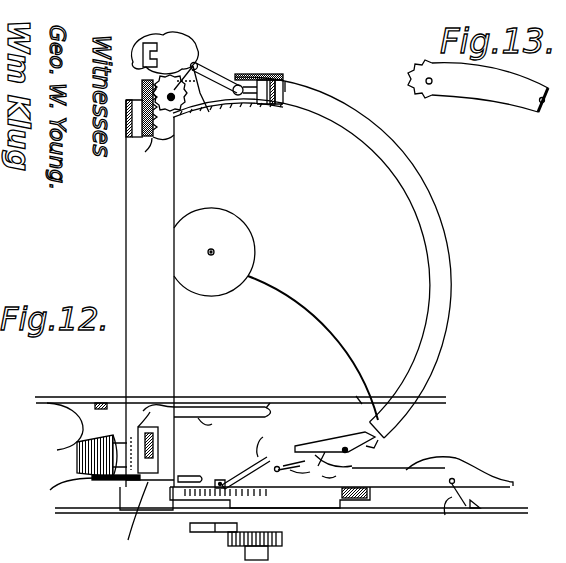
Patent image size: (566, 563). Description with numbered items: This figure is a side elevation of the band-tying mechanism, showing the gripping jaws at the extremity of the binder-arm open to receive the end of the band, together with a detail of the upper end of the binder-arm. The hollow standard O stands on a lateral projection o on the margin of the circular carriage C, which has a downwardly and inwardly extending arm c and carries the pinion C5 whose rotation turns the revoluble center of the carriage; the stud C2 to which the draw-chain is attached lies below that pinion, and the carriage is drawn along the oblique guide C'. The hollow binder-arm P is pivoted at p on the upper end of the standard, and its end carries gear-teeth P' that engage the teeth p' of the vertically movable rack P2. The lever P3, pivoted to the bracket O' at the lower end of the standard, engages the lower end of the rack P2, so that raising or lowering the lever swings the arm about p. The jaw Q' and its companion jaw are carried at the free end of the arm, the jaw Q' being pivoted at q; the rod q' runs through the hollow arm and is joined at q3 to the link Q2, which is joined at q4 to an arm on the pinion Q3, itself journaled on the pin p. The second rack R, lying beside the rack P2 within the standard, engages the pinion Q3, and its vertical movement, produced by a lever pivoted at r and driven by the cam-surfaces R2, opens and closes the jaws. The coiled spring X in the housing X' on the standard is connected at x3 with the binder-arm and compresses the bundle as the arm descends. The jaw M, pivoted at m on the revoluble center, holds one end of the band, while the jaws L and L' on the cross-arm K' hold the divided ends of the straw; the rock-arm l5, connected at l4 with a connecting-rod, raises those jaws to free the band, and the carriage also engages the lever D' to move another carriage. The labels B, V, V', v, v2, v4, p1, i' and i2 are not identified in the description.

In FIG. 12, the hollow standard O is at (150, 293).
In FIG. 12, the carriage C is at (175, 241).
In FIG. 12, the second rack R is at (141, 88).
In FIG. 12, the pinion Q3 is at (170, 87).
In FIG. 12, the rack-bar P2 is at (168, 53).
In FIG. 12, the pivot of binder-arm p is at (225, 87).
In FIG. 12, the teeth of rack-bar p' is at (145, 151).
In FIG. 12, the link Q2 is at (224, 74).
In FIG. 12, the link connection to pinion arm q4 is at (230, 72).
In FIG. 12, the link connection to rod q3 is at (250, 78).
In FIG. 12, the binder-arm P is at (343, 257).
In FIG. 13, the binder-arm P is at (490, 97).
In FIG. 12, the rod q' is at (323, 243).
In FIG. 12, the housing X' is at (214, 252).
In FIG. 12, the coiled spring X is at (313, 348).
In FIG. 12, the spring connection x3 is at (356, 396).
In FIG. 12, the bed B is at (258, 397).
In FIG. 12, the bracket O' is at (88, 446).
In FIG. 12, the cam-surfaces R2 is at (77, 458).
In FIG. 12, the lever P3 is at (160, 441).
In FIG. 12, the slide pin p1 is at (133, 453).
In FIG. 12, the bar V' is at (207, 396).
In FIG. 12, the bar end v4 is at (278, 404).
In FIG. 12, the hook v2 is at (212, 426).
In FIG. 12, the jaw M is at (254, 438).
In FIG. 12, the jaw L' is at (246, 469).
In FIG. 12, the jaw L is at (289, 455).
In FIG. 12, the pivot of jaw M m is at (218, 480).
In FIG. 12, the slide v is at (190, 468).
In FIG. 12, the jaw Q' is at (370, 443).
In FIG. 12, the pivot of jaw Q' q is at (382, 440).
In FIG. 12, the link i2 is at (296, 480).
In FIG. 12, the link i' is at (327, 483).
In FIG. 12, the cross-arm K' is at (459, 462).
In FIG. 12, the lever D' is at (370, 496).
In FIG. 12, the pivotal connection l4 is at (482, 500).
In FIG. 12, the rock-arm l5 is at (449, 518).
In FIG. 12, the arm c is at (165, 513).
In FIG. 12, the lateral projection o is at (122, 496).
In FIG. 12, the slide V is at (134, 519).
In FIG. 12, the oblique guide C' is at (247, 527).
In FIG. 12, the pinion C5 is at (228, 540).
In FIG. 12, the stud C2 is at (268, 553).
In FIG. 13, the gear-teeth P' is at (424, 97).
In FIG. 13, the pivot of lever R' r is at (433, 81).